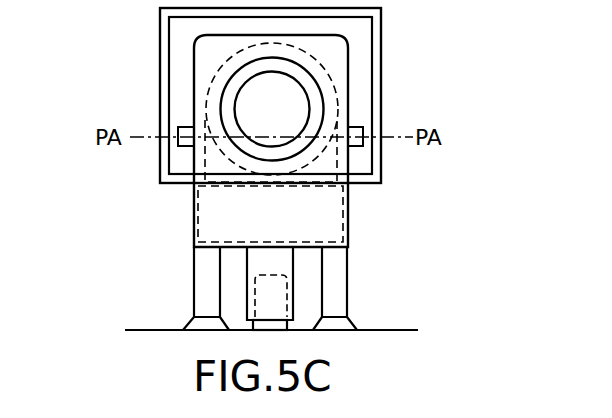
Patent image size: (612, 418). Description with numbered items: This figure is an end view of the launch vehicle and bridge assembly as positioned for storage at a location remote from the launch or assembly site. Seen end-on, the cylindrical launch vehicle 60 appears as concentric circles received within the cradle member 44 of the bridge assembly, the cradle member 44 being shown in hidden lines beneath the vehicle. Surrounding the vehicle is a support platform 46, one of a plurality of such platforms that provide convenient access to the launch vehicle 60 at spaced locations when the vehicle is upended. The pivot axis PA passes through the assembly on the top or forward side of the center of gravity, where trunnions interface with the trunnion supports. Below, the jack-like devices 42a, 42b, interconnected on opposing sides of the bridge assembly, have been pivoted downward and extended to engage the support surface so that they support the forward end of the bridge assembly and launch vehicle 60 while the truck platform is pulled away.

The support platform 46 is at (367, 40).
The launch vehicle 60 is at (293, 103).
The cradle member 44 is at (320, 170).
The jack-like device 42a is at (194, 273).
The jack-like device 42b is at (348, 282).